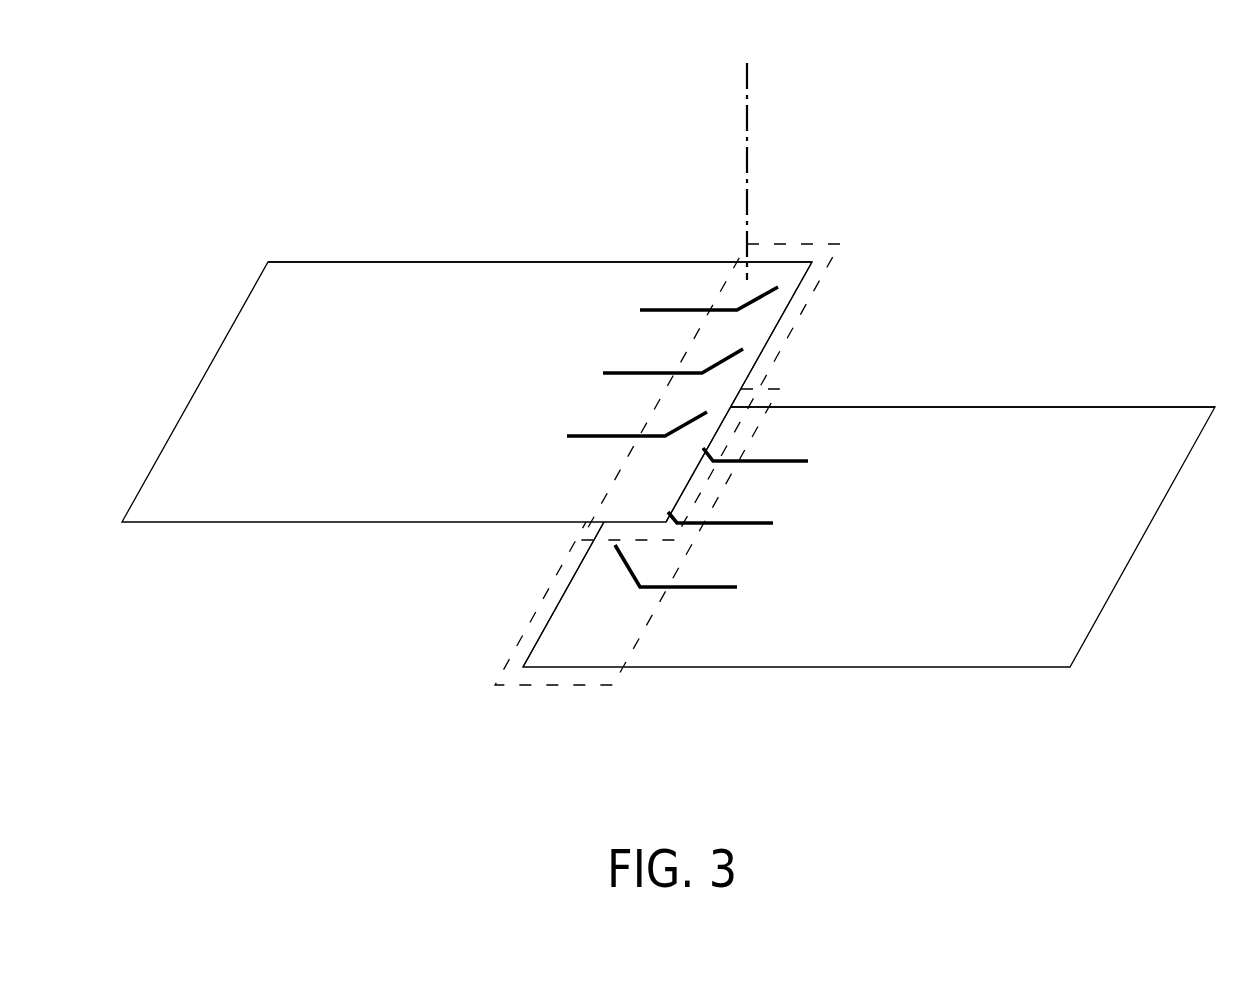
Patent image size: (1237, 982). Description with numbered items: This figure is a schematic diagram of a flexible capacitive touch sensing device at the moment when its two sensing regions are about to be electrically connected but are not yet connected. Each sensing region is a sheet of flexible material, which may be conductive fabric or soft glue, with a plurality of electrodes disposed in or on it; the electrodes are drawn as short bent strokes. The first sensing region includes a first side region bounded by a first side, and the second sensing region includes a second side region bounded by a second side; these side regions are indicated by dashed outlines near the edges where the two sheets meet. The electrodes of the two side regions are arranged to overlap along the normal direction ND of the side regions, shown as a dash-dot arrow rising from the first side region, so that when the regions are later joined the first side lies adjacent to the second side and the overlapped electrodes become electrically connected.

The normal direction ND is at (746, 154).